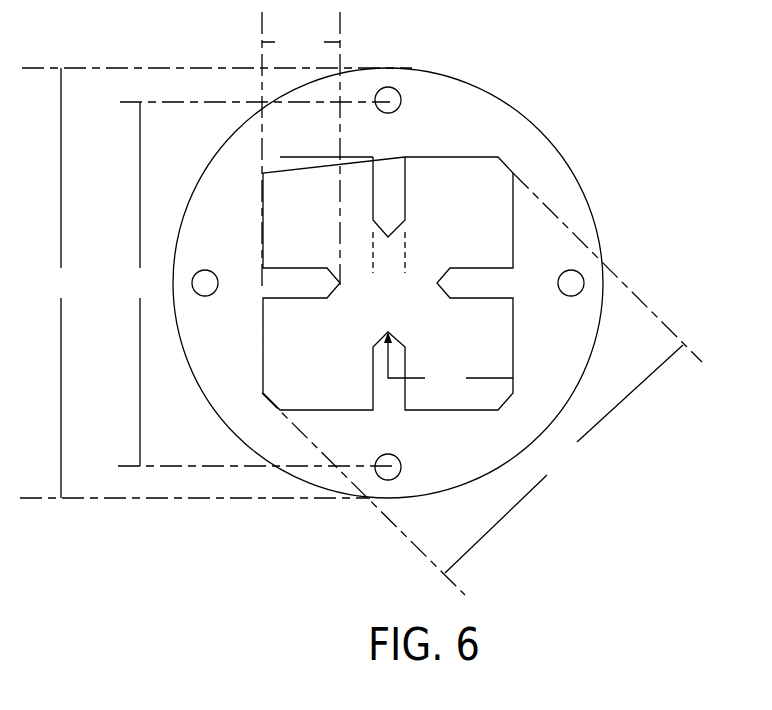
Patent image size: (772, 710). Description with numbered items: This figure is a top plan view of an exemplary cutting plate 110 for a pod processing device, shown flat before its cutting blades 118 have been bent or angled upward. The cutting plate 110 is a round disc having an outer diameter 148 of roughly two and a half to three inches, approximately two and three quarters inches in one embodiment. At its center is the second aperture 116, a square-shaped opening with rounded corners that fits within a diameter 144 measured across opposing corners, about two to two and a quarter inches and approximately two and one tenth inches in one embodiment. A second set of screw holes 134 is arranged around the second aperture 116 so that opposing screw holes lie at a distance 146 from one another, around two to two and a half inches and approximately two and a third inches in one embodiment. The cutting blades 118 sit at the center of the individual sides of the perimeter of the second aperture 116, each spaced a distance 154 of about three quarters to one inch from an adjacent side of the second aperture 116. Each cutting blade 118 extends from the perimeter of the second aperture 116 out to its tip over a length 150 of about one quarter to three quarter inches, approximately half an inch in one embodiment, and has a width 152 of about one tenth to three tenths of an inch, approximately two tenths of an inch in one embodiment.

The cutting plate 110 is at (633, 98).
The second aperture 116 is at (483, 226).
The cutting blades 118 is at (392, 198).
The second set of screw holes 134 is at (389, 90).
The diameter 144 is at (482, 384).
The distance 146 is at (255, 284).
The outer diameter 148 is at (216, 283).
The length 150 is at (301, 149).
The width 152 is at (389, 269).
The distance 154 is at (448, 363).